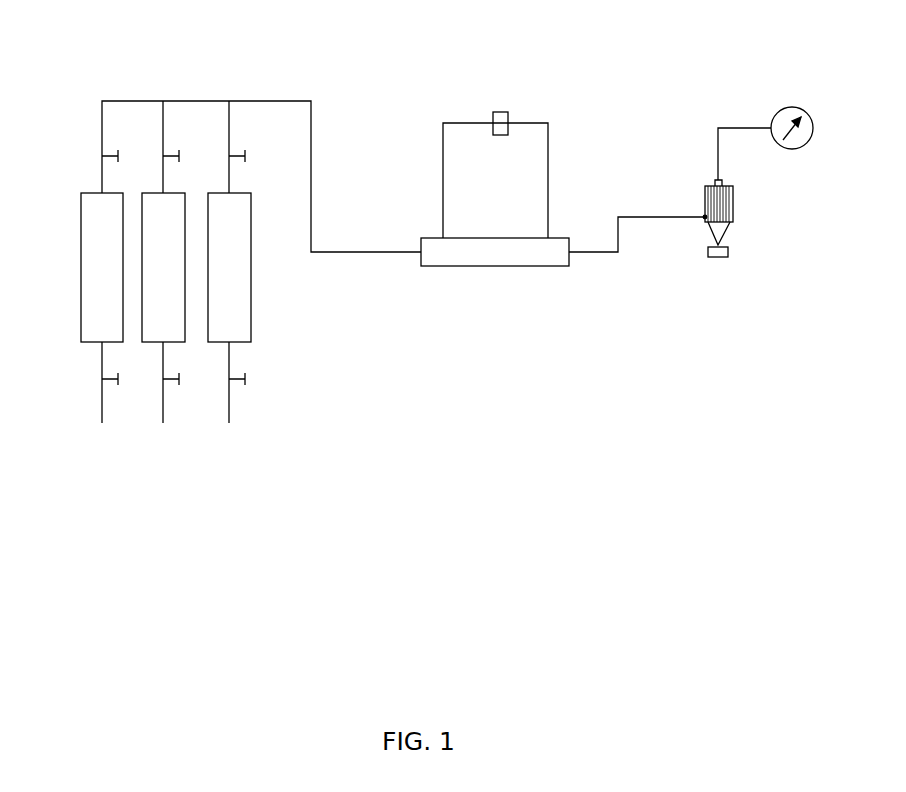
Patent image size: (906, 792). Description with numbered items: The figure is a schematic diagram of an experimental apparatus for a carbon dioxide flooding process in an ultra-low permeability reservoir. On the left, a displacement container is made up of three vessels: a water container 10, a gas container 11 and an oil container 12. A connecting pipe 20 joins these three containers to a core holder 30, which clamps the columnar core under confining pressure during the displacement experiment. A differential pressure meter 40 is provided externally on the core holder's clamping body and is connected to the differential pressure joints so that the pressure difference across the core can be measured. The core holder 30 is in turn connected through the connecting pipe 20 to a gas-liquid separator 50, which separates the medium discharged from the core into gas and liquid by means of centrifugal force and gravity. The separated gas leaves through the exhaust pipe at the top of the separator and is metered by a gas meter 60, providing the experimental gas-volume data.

The water container 10 is at (103, 310).
The gas container 11 is at (158, 267).
The oil container 12 is at (236, 300).
The connecting pipe 20 is at (281, 100).
The core holder 30 is at (476, 256).
The differential pressure meter 40 is at (500, 110).
The gas-liquid separator 50 is at (722, 228).
The gas meter 60 is at (785, 107).